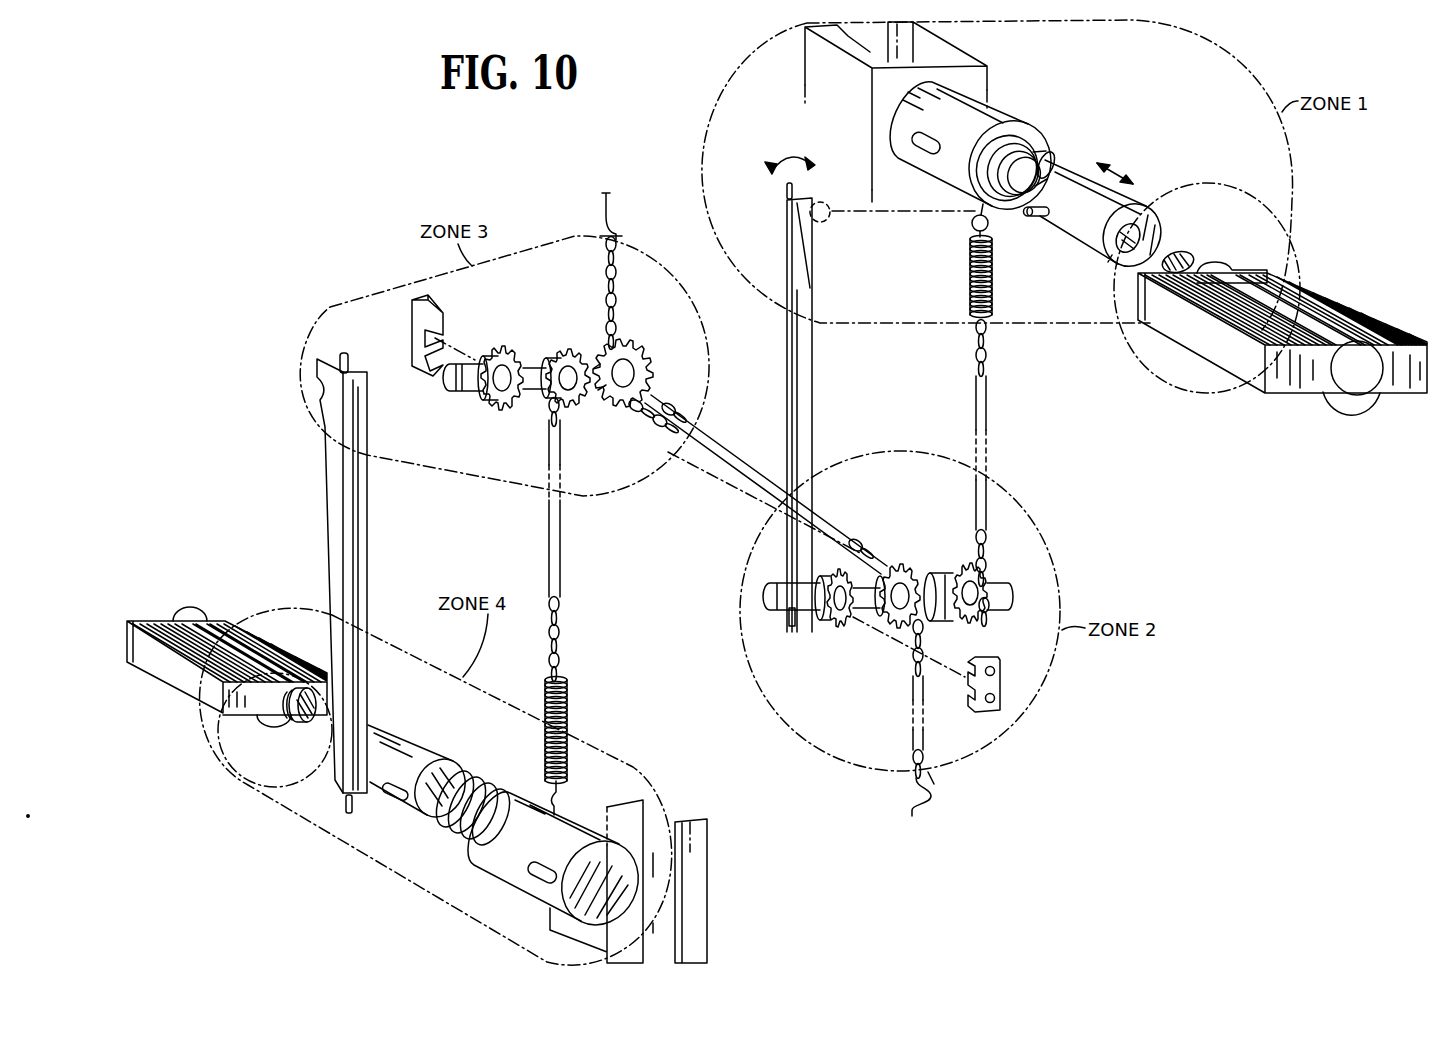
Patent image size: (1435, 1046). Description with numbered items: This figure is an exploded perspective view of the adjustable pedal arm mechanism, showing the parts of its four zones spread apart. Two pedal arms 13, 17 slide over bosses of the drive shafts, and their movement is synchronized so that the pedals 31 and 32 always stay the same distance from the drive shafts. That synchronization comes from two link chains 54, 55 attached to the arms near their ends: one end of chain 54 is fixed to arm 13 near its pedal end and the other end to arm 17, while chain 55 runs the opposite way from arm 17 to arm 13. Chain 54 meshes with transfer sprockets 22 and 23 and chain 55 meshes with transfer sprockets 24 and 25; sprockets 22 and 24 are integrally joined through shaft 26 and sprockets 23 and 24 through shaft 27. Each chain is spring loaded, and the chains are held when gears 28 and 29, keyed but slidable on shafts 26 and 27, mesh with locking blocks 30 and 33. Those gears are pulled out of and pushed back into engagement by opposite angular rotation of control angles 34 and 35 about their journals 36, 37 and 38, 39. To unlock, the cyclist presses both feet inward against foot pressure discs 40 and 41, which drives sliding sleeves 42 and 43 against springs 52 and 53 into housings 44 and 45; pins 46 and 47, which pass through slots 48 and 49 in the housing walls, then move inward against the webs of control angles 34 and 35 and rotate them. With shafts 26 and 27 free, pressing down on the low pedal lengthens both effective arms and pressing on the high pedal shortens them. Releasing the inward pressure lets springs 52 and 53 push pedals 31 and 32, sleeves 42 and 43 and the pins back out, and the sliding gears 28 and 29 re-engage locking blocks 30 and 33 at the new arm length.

The arm 13 is at (990, 76).
The arm 17 is at (708, 855).
The transfer sprocket 22 is at (966, 568).
The transfer sprocket 23 is at (645, 357).
The transfer sprocket 24 is at (893, 616).
The transfer sprocket 25 is at (580, 403).
The shaft 26 is at (1010, 594).
The shaft 27 is at (452, 389).
The gear 28 is at (820, 624).
The gear 29 is at (498, 402).
The locking block 30 is at (1001, 686).
The pedal 31 is at (1367, 316).
The pedal 32 is at (187, 683).
The locking block 33 is at (440, 312).
The control angle 34 is at (814, 378).
The control angle 35 is at (367, 568).
The journal 36 is at (791, 626).
The journal 37 is at (786, 188).
The journal 38 is at (346, 806).
The journal 39 is at (347, 354).
The foot pressure disc 40 is at (1294, 231).
The foot pressure disc 41 is at (221, 743).
The sliding sleeve 42 is at (1132, 200).
The sliding sleeve 43 is at (422, 806).
The housing 44 is at (1010, 118).
The housing 45 is at (573, 823).
The pin 46 is at (1040, 218).
The pin 47 is at (388, 793).
The slot 48 is at (913, 160).
The slot 49 is at (527, 878).
The spring 52 is at (1050, 163).
The spring 53 is at (458, 815).
The link chain 54 is at (990, 362).
The link chain 55 is at (763, 462).